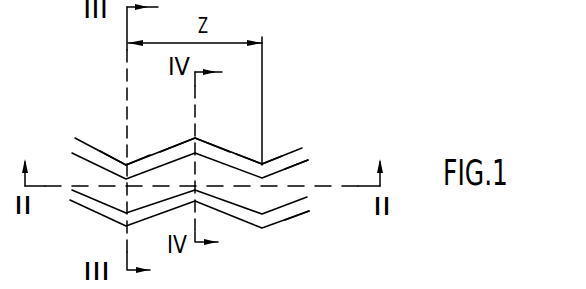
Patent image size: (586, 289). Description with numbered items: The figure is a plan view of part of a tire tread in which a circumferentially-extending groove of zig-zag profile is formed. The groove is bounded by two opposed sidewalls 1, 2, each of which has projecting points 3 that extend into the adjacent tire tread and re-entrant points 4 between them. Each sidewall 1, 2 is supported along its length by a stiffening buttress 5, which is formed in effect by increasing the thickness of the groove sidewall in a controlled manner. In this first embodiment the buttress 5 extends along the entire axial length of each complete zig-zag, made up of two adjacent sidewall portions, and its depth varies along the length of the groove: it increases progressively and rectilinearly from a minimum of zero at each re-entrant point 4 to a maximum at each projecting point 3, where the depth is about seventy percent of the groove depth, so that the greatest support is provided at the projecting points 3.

The sidewall 1 is at (232, 218).
The sidewall 2 is at (265, 162).
The projecting point 3 is at (191, 140).
The re-entrant point 4 is at (126, 163).
The stiffening buttress 5 is at (288, 156).